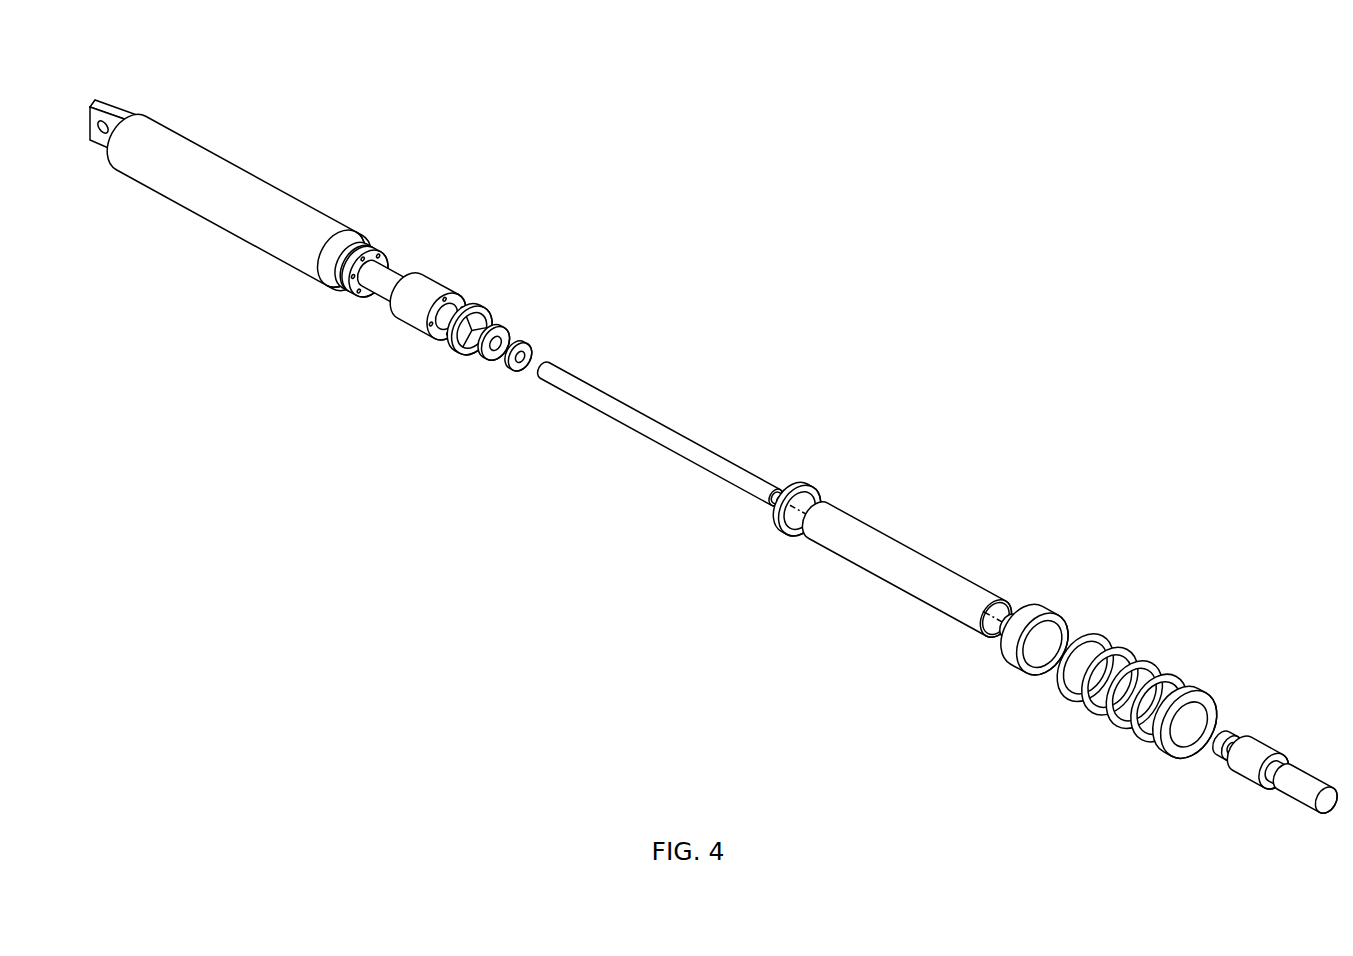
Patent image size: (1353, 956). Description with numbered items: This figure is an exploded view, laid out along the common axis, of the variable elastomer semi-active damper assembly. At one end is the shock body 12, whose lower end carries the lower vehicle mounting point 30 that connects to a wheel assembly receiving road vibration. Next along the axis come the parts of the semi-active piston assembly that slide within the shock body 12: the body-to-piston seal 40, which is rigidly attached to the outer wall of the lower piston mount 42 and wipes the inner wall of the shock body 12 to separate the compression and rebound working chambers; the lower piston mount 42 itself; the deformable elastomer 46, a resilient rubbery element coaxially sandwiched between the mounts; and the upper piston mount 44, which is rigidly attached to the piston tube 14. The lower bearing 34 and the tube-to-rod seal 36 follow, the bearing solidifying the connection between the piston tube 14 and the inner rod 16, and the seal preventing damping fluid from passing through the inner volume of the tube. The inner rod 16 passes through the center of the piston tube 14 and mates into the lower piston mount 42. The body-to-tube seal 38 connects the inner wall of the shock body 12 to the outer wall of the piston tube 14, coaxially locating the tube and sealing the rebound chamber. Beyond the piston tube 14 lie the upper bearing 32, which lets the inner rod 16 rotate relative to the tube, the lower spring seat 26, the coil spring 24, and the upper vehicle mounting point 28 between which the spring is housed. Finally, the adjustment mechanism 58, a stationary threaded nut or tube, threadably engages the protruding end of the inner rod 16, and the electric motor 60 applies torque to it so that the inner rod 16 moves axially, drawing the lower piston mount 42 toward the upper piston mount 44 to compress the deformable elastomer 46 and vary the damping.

The lower vehicle mounting point 30 is at (136, 84).
The shock body 12 is at (210, 155).
The body-to-piston seal 40 is at (370, 243).
The lower piston mount 42 is at (385, 247).
The deformable elastomer 46 is at (435, 280).
The upper piston mount 44 is at (478, 303).
The lower bearing 34 is at (503, 322).
The tube-to-rod seal 36 is at (530, 337).
The inner rod 16 is at (633, 412).
The body-to-tube seal 38 is at (807, 477).
The piston tube 14 is at (905, 553).
The upper bearing 32 is at (1030, 617).
The lower spring seat 26 is at (1055, 612).
The coil spring 24 is at (1118, 653).
The upper vehicle mounting point 28 is at (1207, 695).
The adjustment mechanism 58 is at (1228, 733).
The electric motor 60 is at (1258, 752).